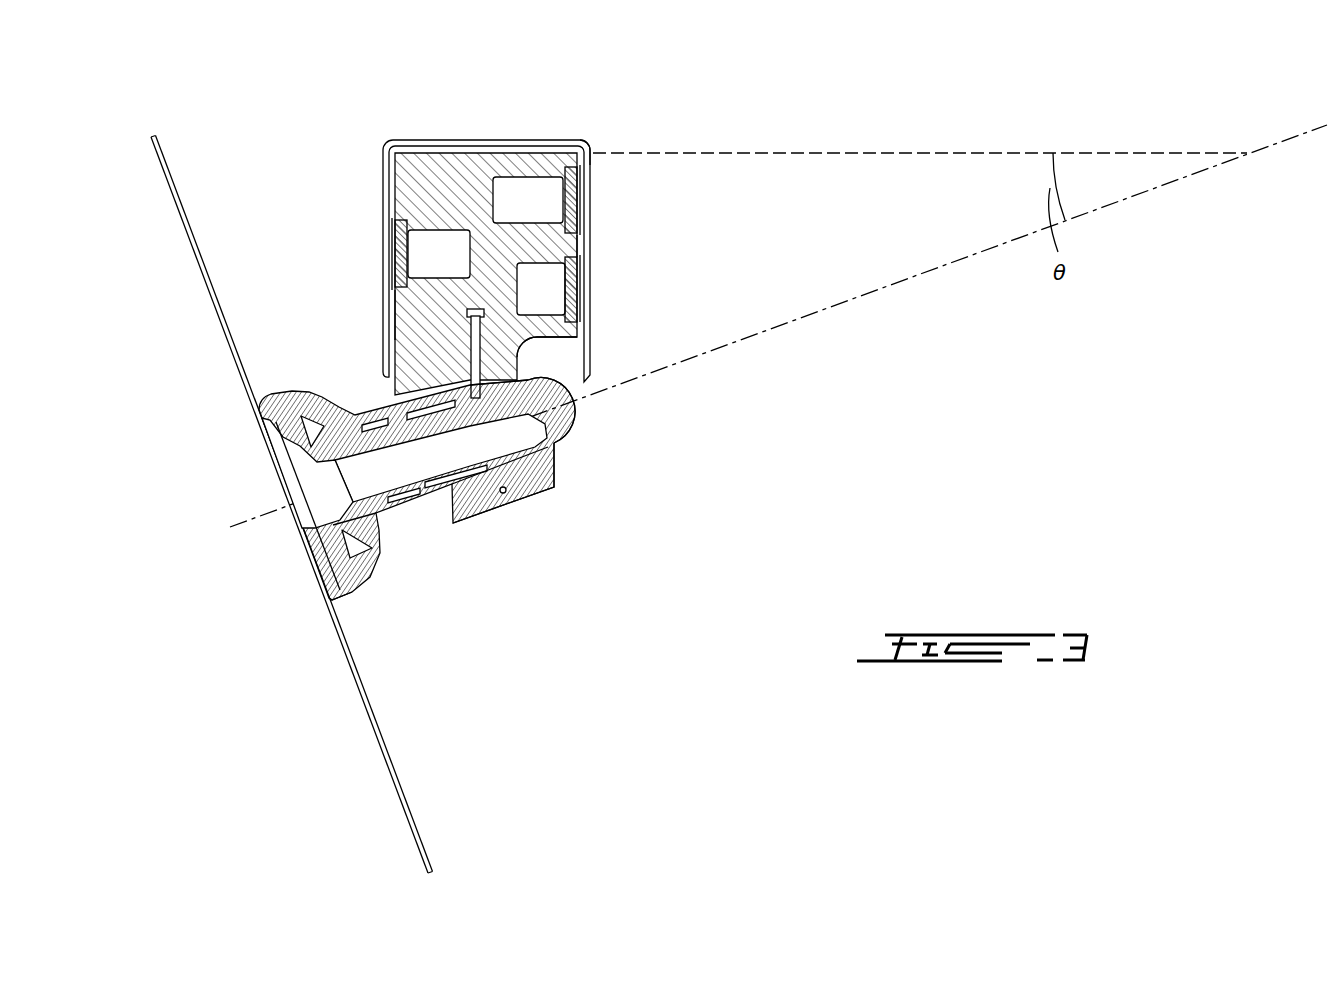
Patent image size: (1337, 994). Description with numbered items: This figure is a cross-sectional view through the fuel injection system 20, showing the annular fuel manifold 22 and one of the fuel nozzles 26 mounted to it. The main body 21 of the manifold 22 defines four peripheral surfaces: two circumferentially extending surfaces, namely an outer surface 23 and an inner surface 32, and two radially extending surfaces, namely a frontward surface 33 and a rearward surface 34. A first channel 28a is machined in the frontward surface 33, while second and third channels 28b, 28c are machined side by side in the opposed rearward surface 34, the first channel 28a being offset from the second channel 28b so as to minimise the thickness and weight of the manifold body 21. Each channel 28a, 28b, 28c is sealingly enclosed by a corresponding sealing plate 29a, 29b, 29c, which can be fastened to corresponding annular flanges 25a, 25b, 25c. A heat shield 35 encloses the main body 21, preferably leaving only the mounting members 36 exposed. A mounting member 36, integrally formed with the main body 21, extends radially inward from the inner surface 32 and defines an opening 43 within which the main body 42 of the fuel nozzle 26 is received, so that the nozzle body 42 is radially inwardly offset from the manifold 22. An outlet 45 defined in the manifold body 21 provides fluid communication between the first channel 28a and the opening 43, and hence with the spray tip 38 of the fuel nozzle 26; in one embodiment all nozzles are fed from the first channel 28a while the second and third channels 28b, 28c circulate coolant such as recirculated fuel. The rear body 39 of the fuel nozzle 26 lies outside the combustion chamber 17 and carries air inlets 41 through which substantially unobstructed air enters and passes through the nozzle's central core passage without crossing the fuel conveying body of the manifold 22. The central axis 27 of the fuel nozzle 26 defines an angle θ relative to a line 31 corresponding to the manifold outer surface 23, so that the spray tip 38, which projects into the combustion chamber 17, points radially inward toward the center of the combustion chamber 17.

The combustion chamber 17 is at (203, 257).
The fuel injection system 20 is at (278, 170).
The main body 21 is at (479, 213).
The annular fuel manifold 22 is at (394, 128).
The outer surface 23 is at (448, 152).
The annular flange 25a is at (397, 276).
The annular flange 25b is at (588, 308).
The annular flange 25c is at (590, 173).
The fuel nozzle 26 is at (404, 505).
The central axis 27 is at (268, 512).
The first channel 28a is at (435, 248).
The second channel 28b is at (548, 290).
The third channel 28c is at (530, 195).
The sealing plate 29a is at (397, 225).
The sealing plate 29b is at (576, 290).
The sealing plate 29c is at (586, 216).
The line 31 is at (930, 152).
The inner surface 32 is at (563, 340).
The frontward surface 33 is at (395, 325).
The rearward surface 34 is at (593, 160).
The heat shield 35 is at (592, 263).
The mounting member 36 is at (547, 483).
The spray tip 38 is at (323, 610).
The rear body 39 is at (568, 423).
The air inlet 41 is at (557, 438).
The main body 42 is at (423, 493).
The opening 43 is at (540, 400).
The outlet 45 is at (503, 494).